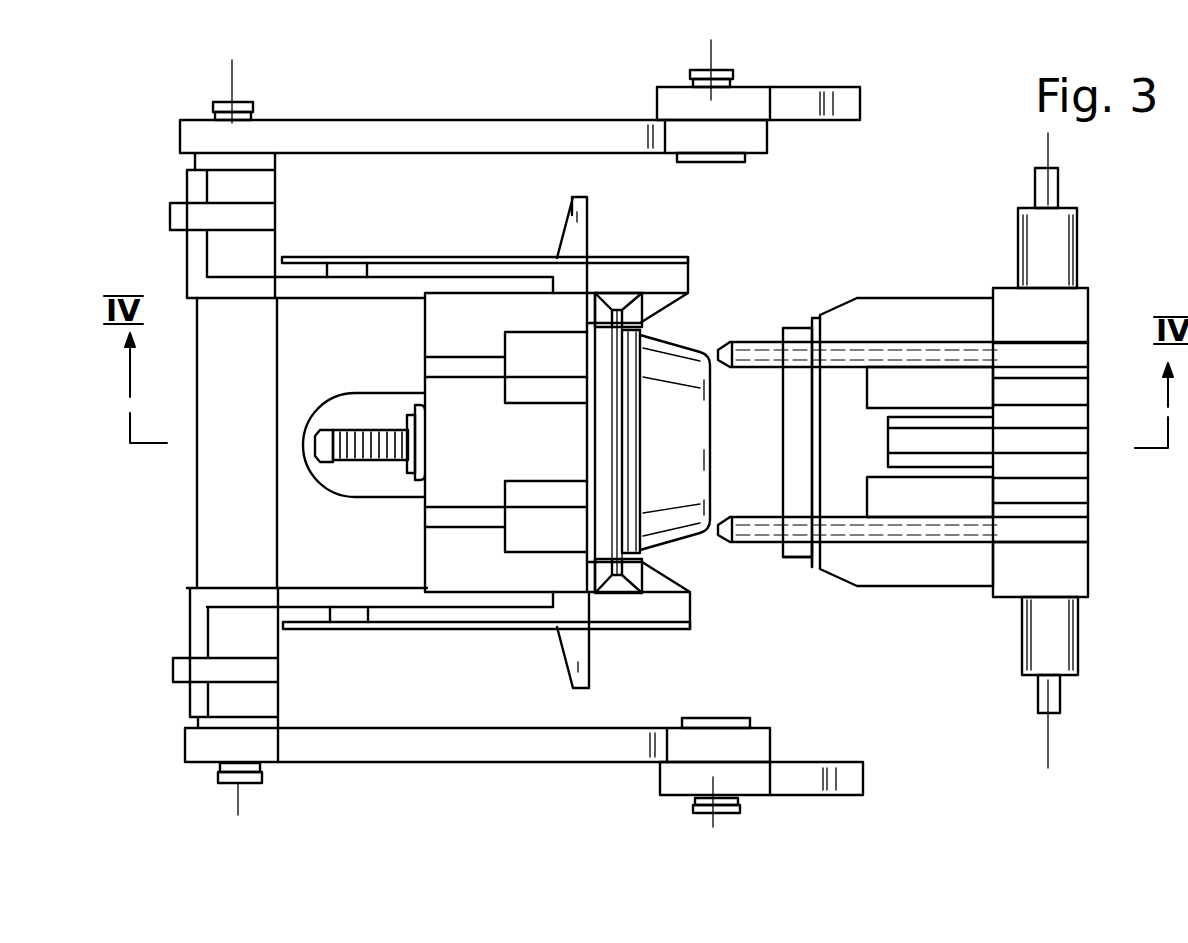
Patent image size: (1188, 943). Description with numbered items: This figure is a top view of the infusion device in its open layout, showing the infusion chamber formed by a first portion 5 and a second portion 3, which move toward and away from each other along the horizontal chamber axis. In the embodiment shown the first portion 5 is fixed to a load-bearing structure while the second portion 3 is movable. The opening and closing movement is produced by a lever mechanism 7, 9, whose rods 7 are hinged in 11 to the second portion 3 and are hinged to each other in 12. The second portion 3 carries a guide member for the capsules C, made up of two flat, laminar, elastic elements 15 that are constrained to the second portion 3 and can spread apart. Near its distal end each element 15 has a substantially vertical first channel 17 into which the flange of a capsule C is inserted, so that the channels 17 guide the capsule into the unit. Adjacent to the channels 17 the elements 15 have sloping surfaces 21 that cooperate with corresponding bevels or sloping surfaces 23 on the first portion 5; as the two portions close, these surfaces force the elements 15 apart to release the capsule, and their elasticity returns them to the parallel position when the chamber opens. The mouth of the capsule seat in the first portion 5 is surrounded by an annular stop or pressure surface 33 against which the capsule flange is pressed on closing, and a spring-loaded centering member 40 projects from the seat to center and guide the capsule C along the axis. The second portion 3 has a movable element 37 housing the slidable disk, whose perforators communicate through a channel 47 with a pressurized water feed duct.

The second portion of the infusion chamber 3 is at (507, 241).
The first portion of the infusion chamber 5 is at (911, 283).
The rods of the lever mechanism 7 is at (452, 128).
The lever mechanism 9 is at (803, 110).
The hinge of rods to second portion 11 is at (247, 103).
The hinge between rods 12 is at (730, 72).
The guide elements 15 is at (424, 255).
The first channel 17 is at (623, 293).
The sloping surfaces 21 is at (672, 306).
The bevels or sloping surfaces 23 is at (828, 313).
The annular stop or pressure surface 33 is at (808, 562).
The movable element 37 is at (348, 312).
The centering member 40 is at (792, 328).
The channel 47 is at (390, 428).
The capsule C is at (700, 440).